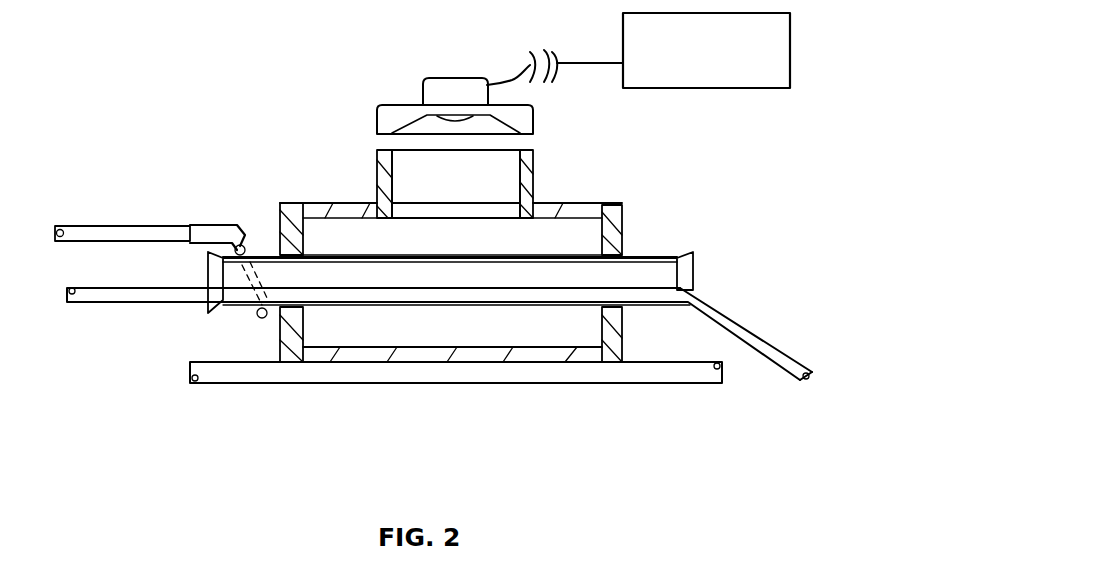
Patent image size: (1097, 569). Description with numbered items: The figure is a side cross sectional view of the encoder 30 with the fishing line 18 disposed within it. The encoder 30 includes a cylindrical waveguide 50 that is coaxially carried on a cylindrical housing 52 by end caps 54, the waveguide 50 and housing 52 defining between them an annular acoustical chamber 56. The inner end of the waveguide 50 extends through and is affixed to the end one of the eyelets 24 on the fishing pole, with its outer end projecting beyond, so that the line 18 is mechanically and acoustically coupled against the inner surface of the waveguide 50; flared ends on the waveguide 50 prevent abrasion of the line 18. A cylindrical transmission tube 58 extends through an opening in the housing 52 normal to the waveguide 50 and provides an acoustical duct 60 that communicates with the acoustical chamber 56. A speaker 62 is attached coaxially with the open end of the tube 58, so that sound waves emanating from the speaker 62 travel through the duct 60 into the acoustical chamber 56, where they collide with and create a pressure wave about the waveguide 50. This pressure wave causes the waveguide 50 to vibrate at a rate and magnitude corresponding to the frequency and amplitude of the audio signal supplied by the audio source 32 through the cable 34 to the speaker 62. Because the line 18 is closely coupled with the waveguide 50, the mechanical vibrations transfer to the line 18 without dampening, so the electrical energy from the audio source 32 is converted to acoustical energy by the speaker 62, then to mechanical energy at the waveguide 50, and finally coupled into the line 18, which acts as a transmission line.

The fishing line 18 is at (187, 292).
The eyelets 24 is at (207, 230).
The encoder 30 is at (640, 162).
The audio source 32 is at (758, 88).
The cable 34 is at (565, 63).
The cylindrical waveguide 50 is at (652, 260).
The cylindrical housing 52 is at (562, 208).
The end caps 54 is at (288, 327).
The annular acoustical chamber 56 is at (327, 240).
The cylindrical transmission tube 58 is at (378, 175).
The acoustical duct 60 is at (507, 182).
The speaker 62 is at (378, 115).